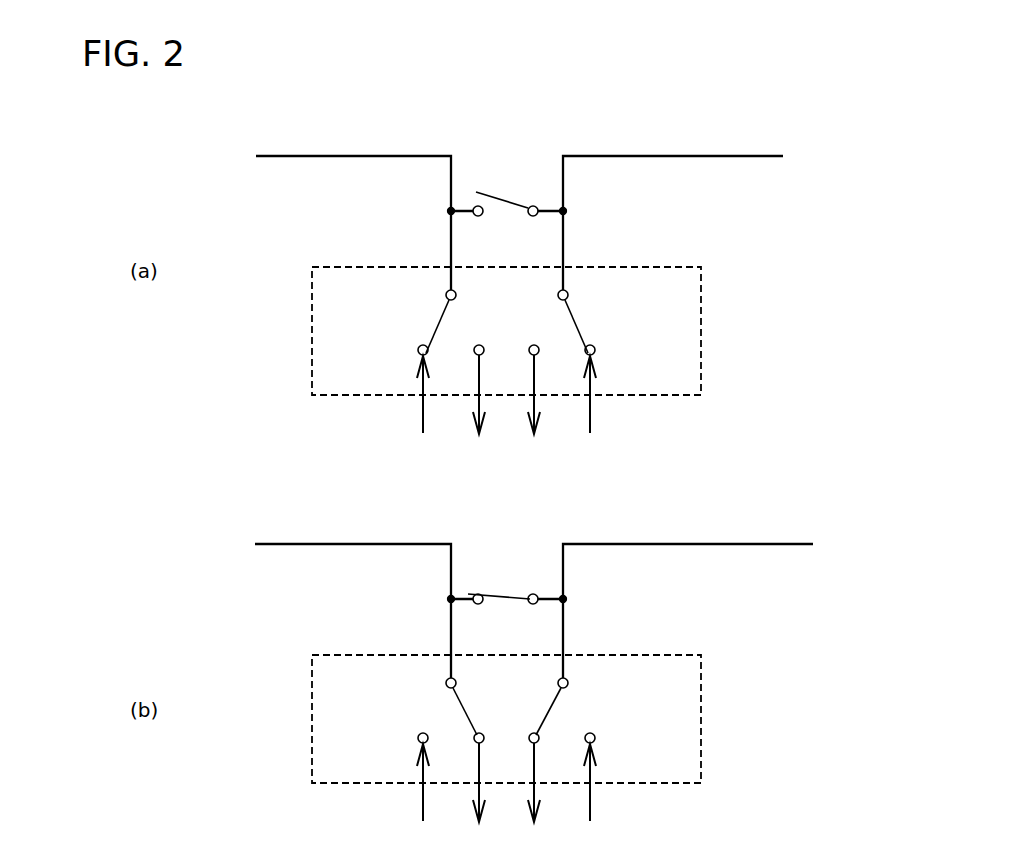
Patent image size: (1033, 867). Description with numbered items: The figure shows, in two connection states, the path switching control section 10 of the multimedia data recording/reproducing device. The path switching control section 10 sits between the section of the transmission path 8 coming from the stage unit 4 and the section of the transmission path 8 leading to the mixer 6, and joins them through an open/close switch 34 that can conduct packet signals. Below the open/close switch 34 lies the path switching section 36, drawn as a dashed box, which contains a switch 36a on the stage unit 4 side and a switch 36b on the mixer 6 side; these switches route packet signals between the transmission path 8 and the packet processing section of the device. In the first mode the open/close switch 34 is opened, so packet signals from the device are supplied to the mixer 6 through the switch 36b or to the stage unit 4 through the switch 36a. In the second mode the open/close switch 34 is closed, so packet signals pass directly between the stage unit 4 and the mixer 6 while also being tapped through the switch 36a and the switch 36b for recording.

The stage unit 4 is at (199, 351).
The mixer 6 is at (863, 352).
The transmission path 8 is at (356, 152).
The path switching control section 10 is at (518, 176).
The open/close switch 34 is at (494, 201).
The path switching section 36 is at (680, 332).
The switch on the stage unit side 36a is at (447, 336).
The switch on the mixer side 36b is at (560, 339).